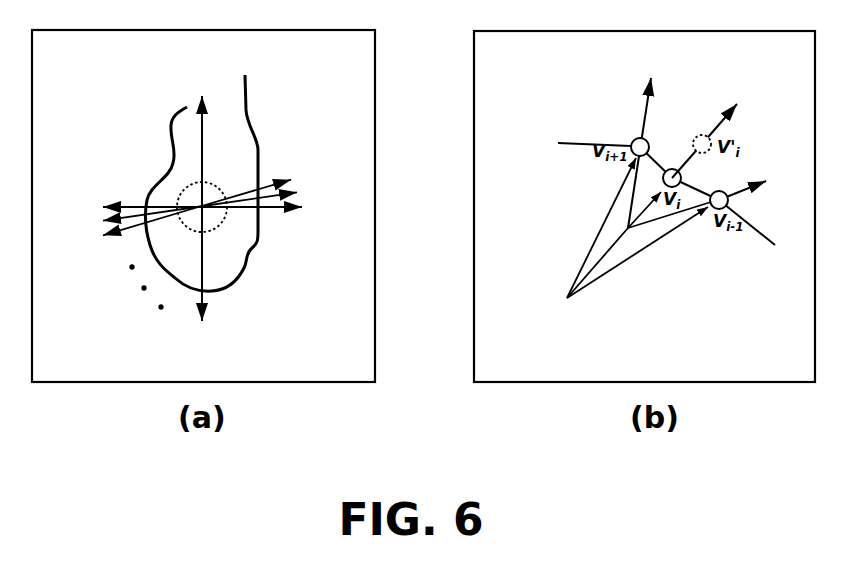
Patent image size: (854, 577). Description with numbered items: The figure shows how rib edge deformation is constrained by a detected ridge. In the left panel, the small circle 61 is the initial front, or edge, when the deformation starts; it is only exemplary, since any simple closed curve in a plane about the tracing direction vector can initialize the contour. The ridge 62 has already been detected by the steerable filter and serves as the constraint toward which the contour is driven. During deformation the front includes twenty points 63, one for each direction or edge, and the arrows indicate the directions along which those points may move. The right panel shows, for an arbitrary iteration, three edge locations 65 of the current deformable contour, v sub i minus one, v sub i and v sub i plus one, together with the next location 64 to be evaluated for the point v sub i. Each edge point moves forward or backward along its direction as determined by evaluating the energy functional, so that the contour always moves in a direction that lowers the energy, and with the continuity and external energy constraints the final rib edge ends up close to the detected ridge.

The small circle 61 is at (172, 172).
The ridge 62 is at (262, 108).
The points 63 is at (110, 248).
The next location 64 is at (686, 137).
The edge locations 65 is at (628, 242).